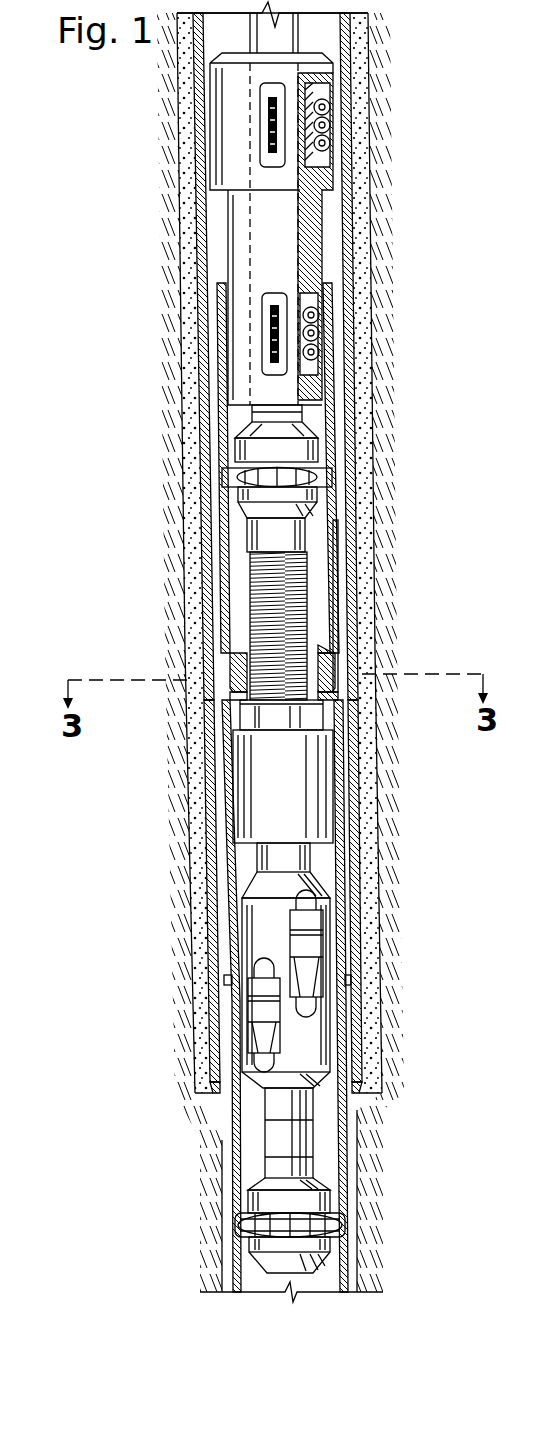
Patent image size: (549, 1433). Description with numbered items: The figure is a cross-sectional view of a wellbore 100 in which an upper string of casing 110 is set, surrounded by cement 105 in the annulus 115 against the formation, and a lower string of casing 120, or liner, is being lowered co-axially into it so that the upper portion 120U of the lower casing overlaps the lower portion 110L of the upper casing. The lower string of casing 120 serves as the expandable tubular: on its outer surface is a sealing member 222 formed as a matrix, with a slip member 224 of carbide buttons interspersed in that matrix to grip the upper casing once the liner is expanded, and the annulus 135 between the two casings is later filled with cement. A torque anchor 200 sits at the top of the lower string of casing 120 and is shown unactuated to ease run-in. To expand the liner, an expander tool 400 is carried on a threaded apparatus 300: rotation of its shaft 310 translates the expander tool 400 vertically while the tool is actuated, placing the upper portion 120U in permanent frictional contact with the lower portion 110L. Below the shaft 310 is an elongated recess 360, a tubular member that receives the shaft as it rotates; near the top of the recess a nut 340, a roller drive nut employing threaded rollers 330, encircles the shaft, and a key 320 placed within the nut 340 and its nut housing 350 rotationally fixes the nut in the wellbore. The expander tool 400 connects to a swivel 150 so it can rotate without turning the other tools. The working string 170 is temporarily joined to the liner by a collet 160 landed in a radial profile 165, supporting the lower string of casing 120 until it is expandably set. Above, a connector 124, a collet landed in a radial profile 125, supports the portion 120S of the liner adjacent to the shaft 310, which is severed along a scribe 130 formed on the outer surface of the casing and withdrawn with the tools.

The wellbore 100 is at (143, 136).
The cement 105 is at (187, 200).
The upper string of casing 110 is at (203, 280).
The lower portion of the upper string of casing 110L is at (208, 583).
The annulus 115 is at (232, 962).
The lower string of casing 120 is at (220, 313).
The portion of the lower string of casing adjacent the shaft member 120S is at (226, 660).
The upper portion of the lower string of casing 120U is at (230, 1060).
The connector 124 is at (279, 476).
The radial profile 125 is at (316, 486).
The scribe 130 is at (231, 828).
The annulus 135 is at (365, 1052).
The swivel 150 is at (282, 1138).
The collet 160 is at (242, 1228).
The radial profile 165 is at (344, 1228).
The working string 170 is at (270, 37).
The torque anchor 200 is at (326, 244).
The sealing member 222 is at (332, 995).
The slip member 224 is at (349, 940).
The threaded apparatus 300 is at (215, 714).
The shaft 310 is at (262, 573).
The key 320 is at (338, 700).
The threaded rollers 330 is at (316, 652).
The nut housing 350 is at (336, 632).
The nut 340 is at (314, 703).
The elongated recess 360 is at (288, 808).
The expander tool 400 is at (228, 923).